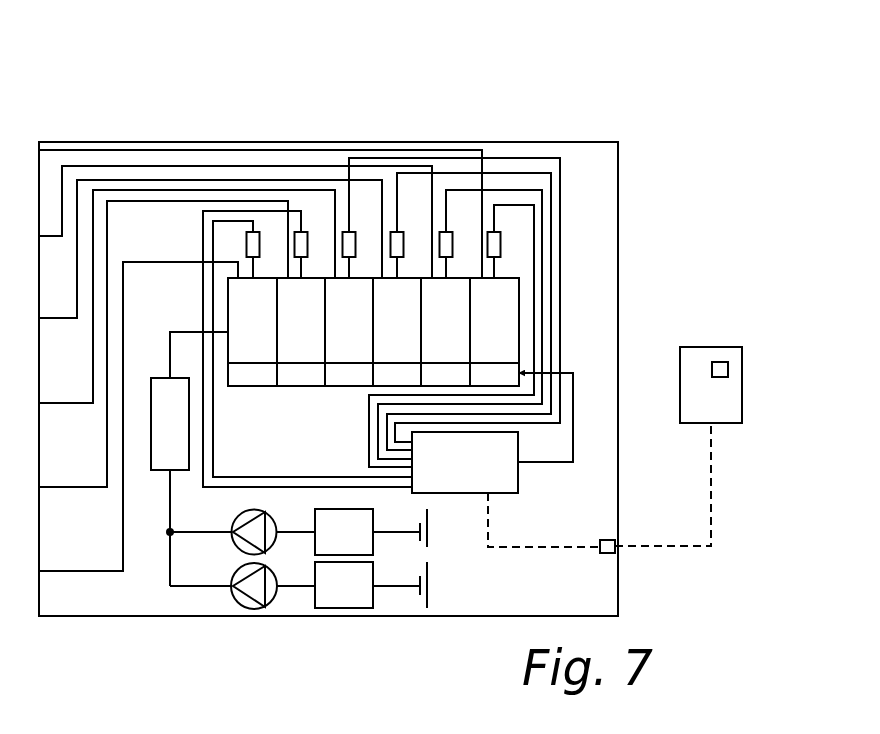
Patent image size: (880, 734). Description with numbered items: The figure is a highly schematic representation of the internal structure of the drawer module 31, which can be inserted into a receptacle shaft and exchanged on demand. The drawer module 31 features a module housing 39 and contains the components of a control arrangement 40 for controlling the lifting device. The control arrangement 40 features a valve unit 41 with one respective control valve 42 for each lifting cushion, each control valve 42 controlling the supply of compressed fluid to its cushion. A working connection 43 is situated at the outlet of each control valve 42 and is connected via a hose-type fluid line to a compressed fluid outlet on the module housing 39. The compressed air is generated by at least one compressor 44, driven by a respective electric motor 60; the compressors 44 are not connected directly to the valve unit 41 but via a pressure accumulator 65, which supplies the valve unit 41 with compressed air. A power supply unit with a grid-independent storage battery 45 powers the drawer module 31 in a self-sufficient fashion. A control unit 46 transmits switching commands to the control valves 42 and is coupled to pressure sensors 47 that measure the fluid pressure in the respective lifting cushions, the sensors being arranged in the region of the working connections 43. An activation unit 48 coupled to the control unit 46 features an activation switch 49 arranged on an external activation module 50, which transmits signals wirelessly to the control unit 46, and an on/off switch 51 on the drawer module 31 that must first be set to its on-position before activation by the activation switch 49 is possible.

The drawer module 31 is at (552, 125).
The module housing 39 is at (152, 142).
The control arrangement 40 is at (218, 560).
The valve unit 41 is at (513, 303).
The control valve 42 is at (358, 305).
The working connection 43 is at (253, 267).
The compressor 44 is at (272, 538).
The storage battery 45 is at (430, 533).
The control unit 46 is at (503, 473).
The pressure sensor 47 is at (447, 245).
The activation unit 48 is at (725, 455).
The activation switch 49 is at (728, 368).
The external activation module 50 is at (697, 360).
The on/off switch 51 is at (610, 538).
The electric motor 60 is at (345, 548).
The pressure accumulator 65 is at (162, 407).